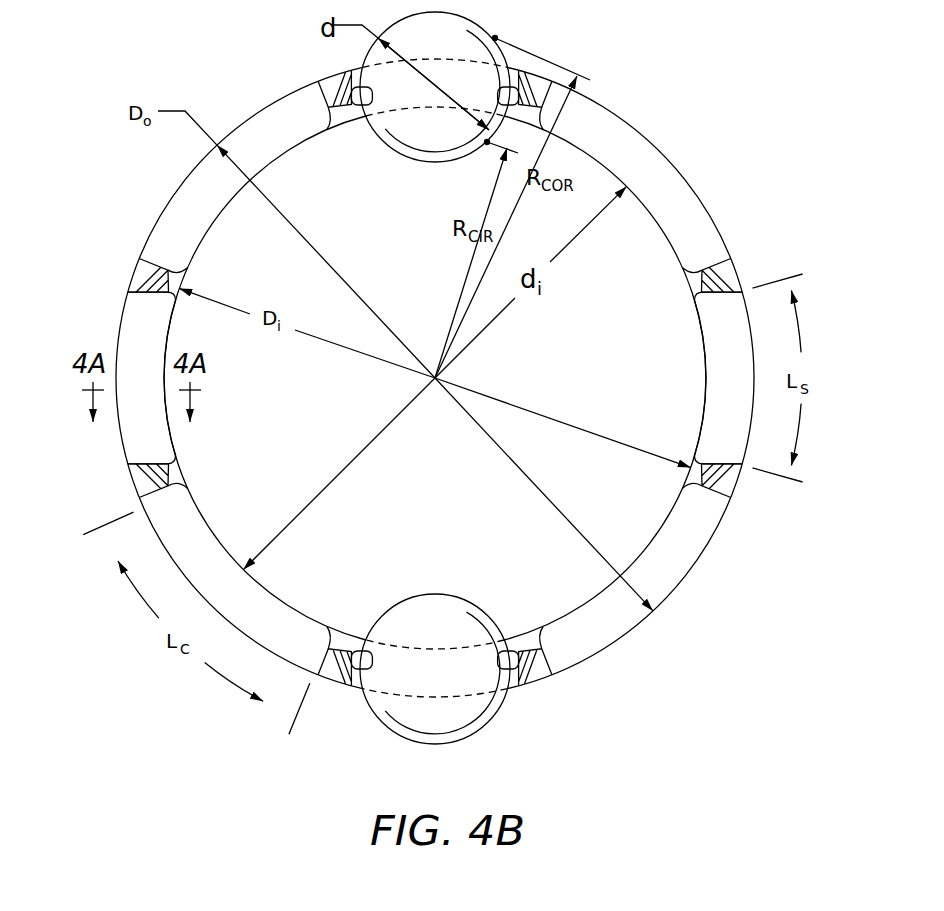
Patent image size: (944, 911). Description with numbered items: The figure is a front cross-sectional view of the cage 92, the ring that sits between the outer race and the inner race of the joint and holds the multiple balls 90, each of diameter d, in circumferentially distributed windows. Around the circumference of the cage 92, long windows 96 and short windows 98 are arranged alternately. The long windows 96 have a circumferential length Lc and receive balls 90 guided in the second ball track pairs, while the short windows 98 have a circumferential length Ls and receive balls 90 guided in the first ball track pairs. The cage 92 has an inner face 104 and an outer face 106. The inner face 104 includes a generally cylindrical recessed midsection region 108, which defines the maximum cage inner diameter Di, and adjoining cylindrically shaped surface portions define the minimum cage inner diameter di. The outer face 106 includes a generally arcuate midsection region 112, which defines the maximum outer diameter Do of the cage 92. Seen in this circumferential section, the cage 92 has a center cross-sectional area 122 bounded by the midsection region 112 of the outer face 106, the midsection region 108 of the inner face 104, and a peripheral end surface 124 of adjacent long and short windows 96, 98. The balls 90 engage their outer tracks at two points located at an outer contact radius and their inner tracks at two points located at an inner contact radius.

The ball 90 is at (474, 22).
The cage 92 is at (410, 374).
The long window 96 is at (550, 96).
The short window 98 is at (370, 113).
The inner face 104 is at (213, 231).
The outer face 106 is at (122, 317).
The midsection region of inner face 108 is at (698, 285).
The midsection region of outer face 112 is at (665, 607).
The center cross-sectional area 122 is at (330, 85).
The peripheral end surface 124 is at (717, 262).